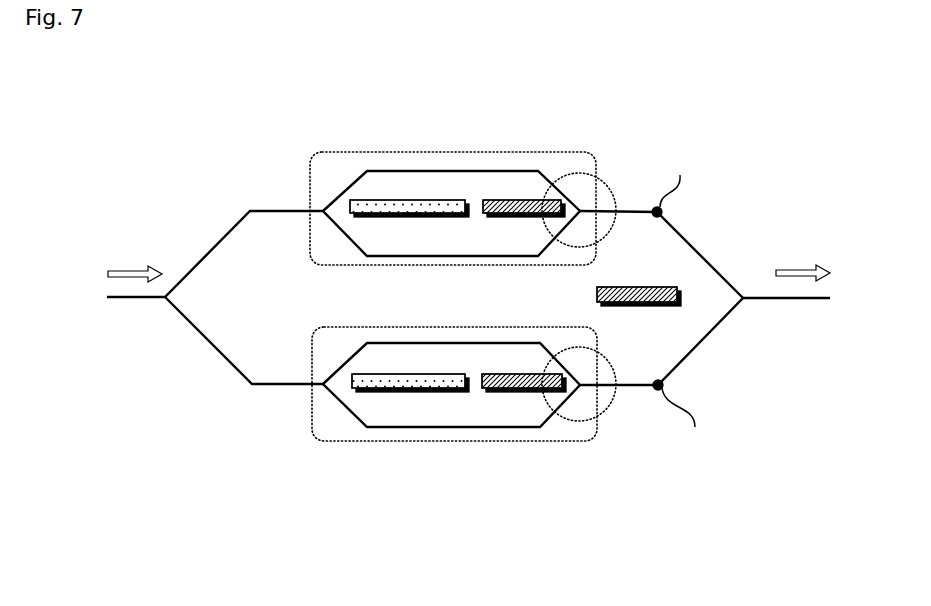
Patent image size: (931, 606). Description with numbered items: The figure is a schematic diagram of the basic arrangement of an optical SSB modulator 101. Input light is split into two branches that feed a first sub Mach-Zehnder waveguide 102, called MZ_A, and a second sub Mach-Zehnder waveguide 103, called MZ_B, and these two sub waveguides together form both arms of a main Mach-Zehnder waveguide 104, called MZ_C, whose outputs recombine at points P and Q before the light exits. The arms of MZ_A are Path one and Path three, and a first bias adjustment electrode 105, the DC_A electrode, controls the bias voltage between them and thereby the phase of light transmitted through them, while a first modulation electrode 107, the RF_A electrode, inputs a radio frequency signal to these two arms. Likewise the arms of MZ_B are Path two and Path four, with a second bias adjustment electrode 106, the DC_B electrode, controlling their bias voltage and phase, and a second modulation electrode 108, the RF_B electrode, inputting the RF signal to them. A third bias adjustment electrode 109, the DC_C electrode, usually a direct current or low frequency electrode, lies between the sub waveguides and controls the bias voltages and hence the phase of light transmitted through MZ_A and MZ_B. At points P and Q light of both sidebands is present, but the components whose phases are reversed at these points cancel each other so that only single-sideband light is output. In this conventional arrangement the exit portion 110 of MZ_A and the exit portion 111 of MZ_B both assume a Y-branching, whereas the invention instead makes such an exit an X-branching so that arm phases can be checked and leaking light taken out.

The optical SSB modulator 101 is at (453, 505).
The first sub Mach-Zehnder waveguide 102 is at (332, 152).
The second sub Mach-Zehnder waveguide 103 is at (313, 437).
The main Mach-Zehnder waveguide 104 is at (703, 258).
The first bias adjustment electrode 105 is at (520, 200).
The second bias adjustment electrode 106 is at (520, 388).
The first modulation electrode 107 is at (407, 200).
The second modulation electrode 108 is at (408, 388).
The third bias adjustment electrode 109 is at (642, 273).
The exit portion of MZ_A 110 is at (578, 172).
The exit portion of MZ_B 111 is at (578, 422).